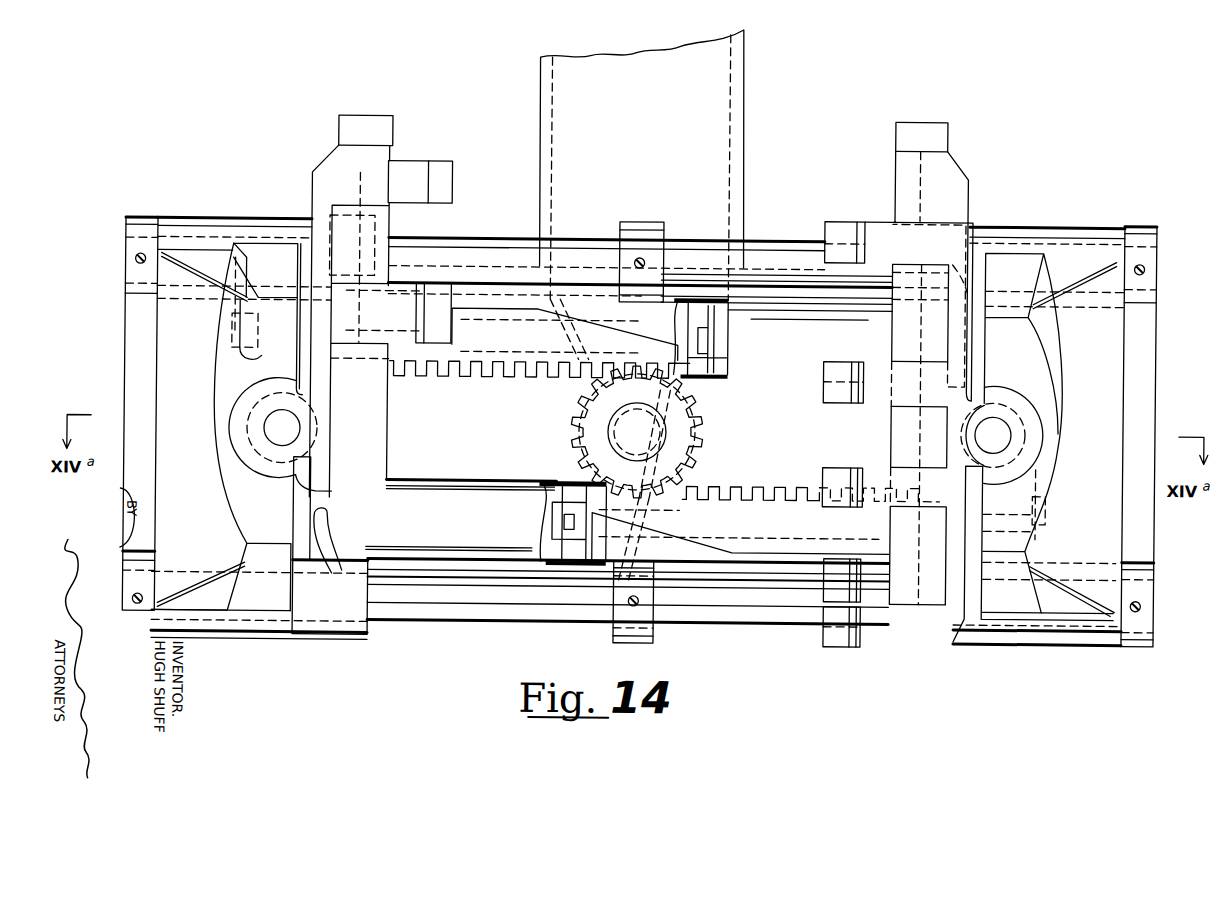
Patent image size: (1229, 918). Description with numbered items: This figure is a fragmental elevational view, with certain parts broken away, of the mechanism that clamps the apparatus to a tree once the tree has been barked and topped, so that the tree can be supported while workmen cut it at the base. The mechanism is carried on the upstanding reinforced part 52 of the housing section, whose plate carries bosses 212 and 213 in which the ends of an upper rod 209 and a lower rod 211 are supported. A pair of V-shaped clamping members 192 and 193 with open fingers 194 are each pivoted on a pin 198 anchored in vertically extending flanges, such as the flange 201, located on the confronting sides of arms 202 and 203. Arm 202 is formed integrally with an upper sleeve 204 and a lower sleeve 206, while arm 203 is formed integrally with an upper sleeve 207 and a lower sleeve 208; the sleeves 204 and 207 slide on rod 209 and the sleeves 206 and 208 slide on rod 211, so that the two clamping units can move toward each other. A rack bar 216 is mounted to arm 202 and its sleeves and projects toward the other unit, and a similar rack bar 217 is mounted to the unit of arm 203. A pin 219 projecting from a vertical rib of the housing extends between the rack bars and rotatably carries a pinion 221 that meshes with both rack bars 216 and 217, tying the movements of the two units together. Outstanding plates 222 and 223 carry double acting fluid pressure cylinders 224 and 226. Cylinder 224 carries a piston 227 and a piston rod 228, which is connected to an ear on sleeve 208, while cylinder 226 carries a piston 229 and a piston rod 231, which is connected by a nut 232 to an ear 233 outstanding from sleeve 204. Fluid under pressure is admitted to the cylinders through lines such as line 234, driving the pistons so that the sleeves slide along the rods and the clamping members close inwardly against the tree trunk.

The upstanding reinforced part 52 is at (742, 96).
The clamping member 192 is at (406, 158).
The clamping member 193 is at (974, 173).
The fingers 194 is at (440, 192).
The pin 198 is at (292, 431).
The flange 201 is at (285, 476).
The arm 202 is at (228, 381).
The arm 203 is at (1034, 373).
The upper sleeve 204 is at (218, 222).
The lower sleeve 206 is at (342, 646).
The upper sleeve 207 is at (1038, 225).
The lower sleeve 208 is at (1029, 644).
The rod 209 is at (778, 239).
The rod 211 is at (522, 601).
The boss 212 is at (140, 237).
The boss 213 is at (139, 587).
The rack bar 216 is at (435, 380).
The rack bar 217 is at (756, 511).
The pin 219 is at (660, 396).
The pinion 221 is at (694, 421).
The outstanding plate 222 is at (304, 496).
The outstanding plate 223 is at (943, 268).
The double acting fluid pressure cylinder 224 is at (481, 508).
The double acting fluid pressure cylinder 226 is at (877, 346).
The piston 227 is at (578, 549).
The piston rod 228 is at (735, 555).
The piston 229 is at (713, 339).
The piston rod 231 is at (491, 319).
The nut 232 is at (247, 365).
The ear 233 is at (270, 302).
The fluid pressure line 234 is at (331, 546).